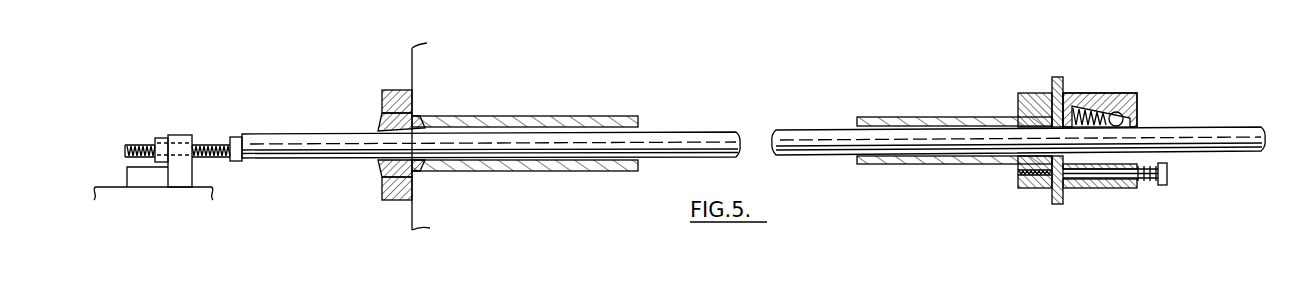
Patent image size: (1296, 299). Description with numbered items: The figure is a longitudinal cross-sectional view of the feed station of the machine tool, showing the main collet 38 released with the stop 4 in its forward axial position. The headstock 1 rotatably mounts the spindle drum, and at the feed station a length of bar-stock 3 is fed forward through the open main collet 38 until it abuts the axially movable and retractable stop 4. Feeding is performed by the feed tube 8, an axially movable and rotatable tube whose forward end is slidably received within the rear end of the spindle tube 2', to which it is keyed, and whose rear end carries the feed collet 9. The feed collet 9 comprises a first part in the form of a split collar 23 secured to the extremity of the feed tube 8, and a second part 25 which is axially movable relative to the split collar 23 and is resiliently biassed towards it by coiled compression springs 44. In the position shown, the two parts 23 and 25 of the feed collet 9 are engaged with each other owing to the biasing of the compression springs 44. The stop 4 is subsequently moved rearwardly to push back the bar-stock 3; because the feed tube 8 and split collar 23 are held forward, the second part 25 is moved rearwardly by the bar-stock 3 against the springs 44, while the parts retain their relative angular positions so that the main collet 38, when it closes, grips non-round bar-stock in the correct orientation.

The headstock 1 is at (425, 60).
The spindle tube 2' is at (508, 128).
The bar-stock 3 is at (303, 159).
The stop 4 is at (210, 145).
The feed tube 8 is at (913, 117).
The feed collet 9 is at (1114, 84).
The split collar 23 is at (1032, 100).
The second part 25 is at (1070, 84).
The main collet 38 is at (371, 104).
The coiled compression spring 44 is at (1112, 188).